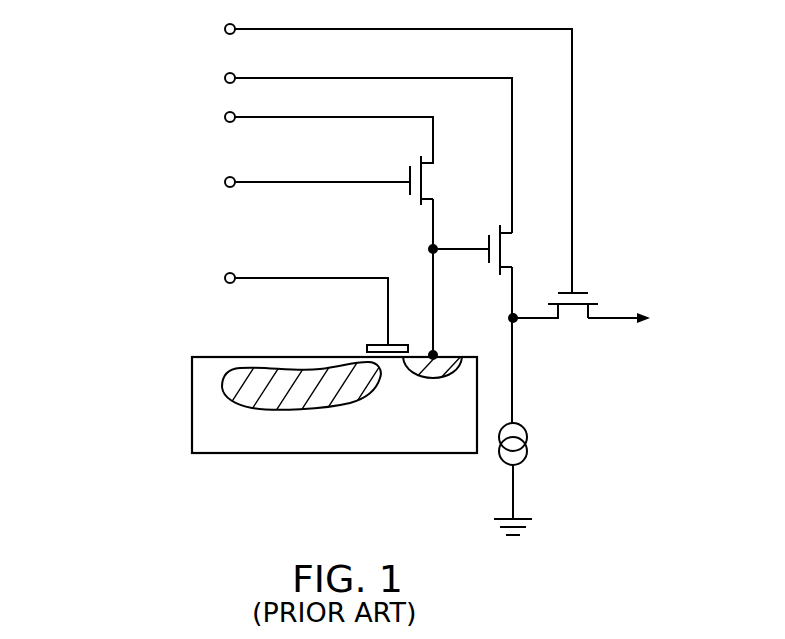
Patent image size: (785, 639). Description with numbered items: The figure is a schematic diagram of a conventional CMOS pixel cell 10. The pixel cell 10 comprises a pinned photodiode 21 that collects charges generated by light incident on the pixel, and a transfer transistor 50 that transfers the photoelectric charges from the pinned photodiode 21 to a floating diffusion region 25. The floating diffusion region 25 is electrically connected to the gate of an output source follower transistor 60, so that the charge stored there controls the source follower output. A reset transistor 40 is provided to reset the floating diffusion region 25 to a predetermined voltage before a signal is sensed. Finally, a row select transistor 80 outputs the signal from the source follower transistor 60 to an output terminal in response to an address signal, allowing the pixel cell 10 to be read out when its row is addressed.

The CMOS pixel cell 10 is at (91, 55).
The pinned photodiode 21 is at (208, 336).
The floating diffusion region 25 is at (430, 396).
The reset transistor 40 is at (395, 202).
The transfer transistor 50 is at (373, 334).
The output source follower transistor 60 is at (479, 219).
The row select transistor 80 is at (597, 278).